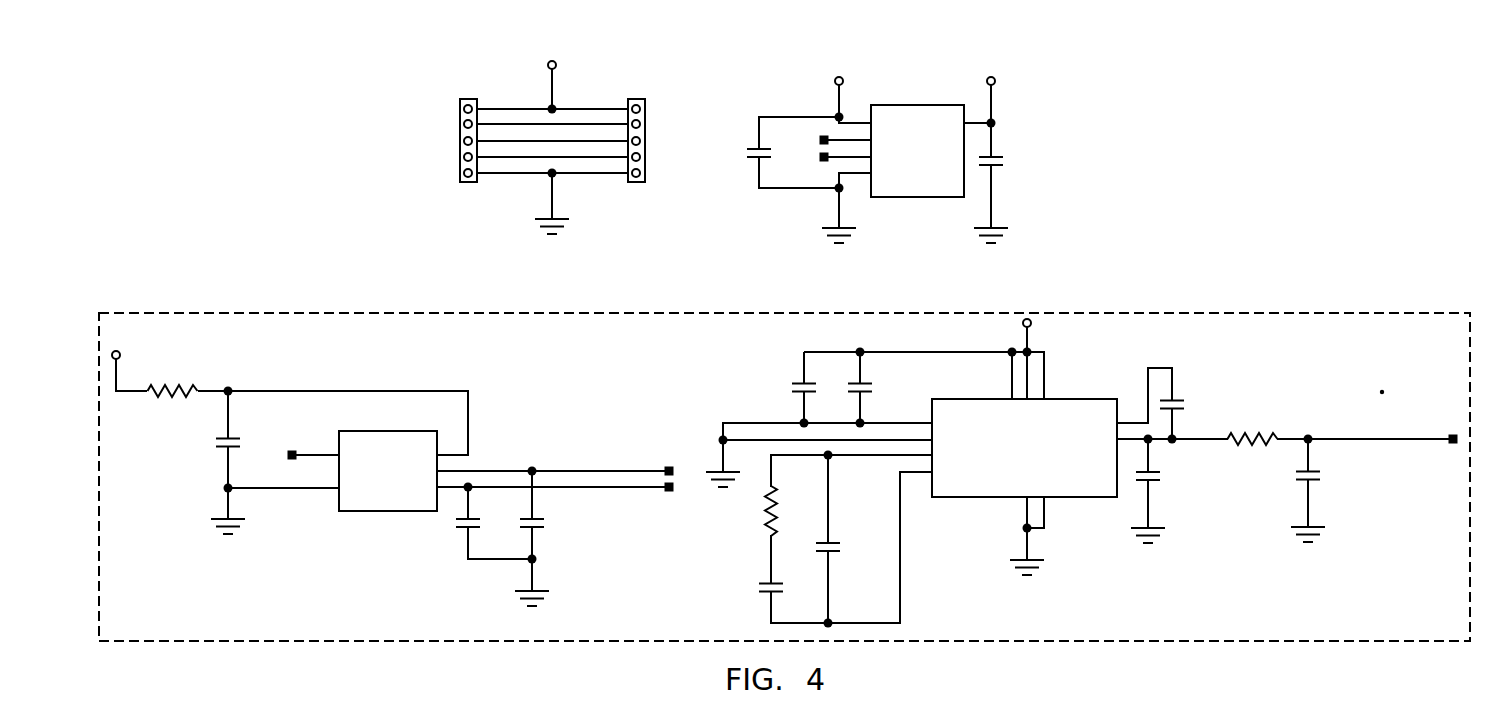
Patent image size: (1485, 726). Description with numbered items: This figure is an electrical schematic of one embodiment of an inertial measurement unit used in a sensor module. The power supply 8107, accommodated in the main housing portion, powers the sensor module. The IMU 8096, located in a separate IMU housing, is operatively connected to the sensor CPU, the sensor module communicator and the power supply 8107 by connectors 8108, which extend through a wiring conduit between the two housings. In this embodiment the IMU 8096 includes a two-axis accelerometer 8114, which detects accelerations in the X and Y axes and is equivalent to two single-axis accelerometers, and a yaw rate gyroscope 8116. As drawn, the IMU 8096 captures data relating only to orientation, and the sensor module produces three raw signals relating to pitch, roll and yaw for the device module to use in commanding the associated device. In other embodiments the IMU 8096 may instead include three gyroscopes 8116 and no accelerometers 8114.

The connectors 8108 is at (623, 85).
The power supply 8107 is at (1032, 132).
The inertial measurement unit 8096 is at (1055, 313).
The two-axis accelerometer 8114 is at (585, 543).
The yaw rate gyroscope 8116 is at (1245, 585).